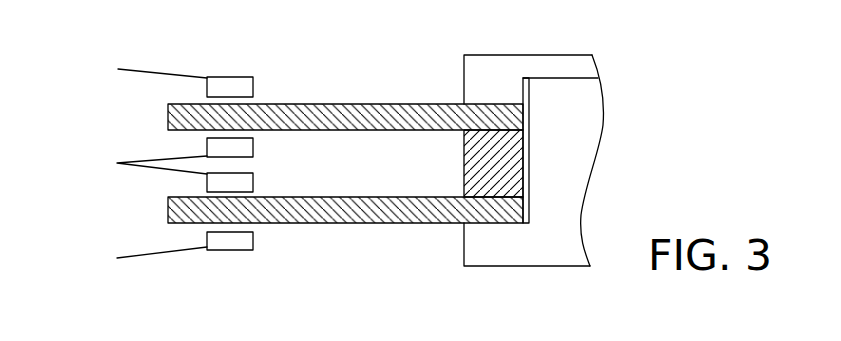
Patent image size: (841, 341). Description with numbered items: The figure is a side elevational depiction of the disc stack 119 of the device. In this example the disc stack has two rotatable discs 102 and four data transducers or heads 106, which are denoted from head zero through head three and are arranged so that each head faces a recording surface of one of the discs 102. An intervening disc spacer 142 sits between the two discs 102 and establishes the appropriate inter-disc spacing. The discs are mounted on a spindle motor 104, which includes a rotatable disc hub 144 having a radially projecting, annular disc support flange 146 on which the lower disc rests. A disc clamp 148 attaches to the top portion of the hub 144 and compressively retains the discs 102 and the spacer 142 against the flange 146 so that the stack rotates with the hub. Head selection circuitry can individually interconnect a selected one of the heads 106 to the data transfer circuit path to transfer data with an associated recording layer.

The rotatable discs 102 is at (345, 104).
The spindle motor 104 is at (593, 179).
The data transducers (heads) 106 is at (232, 77).
The disc stack 119 is at (128, 35).
The disc spacer 142 is at (464, 167).
The rotatable disc hub 144 is at (582, 128).
The disc support flange 146 is at (480, 253).
The disc clamp 148 is at (515, 63).